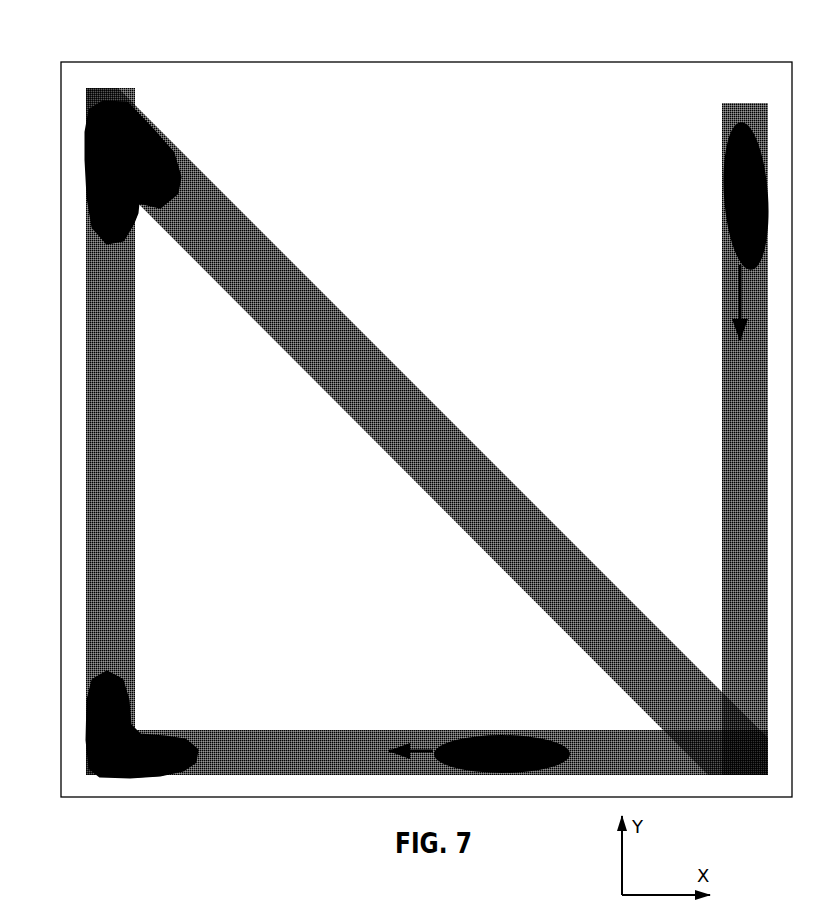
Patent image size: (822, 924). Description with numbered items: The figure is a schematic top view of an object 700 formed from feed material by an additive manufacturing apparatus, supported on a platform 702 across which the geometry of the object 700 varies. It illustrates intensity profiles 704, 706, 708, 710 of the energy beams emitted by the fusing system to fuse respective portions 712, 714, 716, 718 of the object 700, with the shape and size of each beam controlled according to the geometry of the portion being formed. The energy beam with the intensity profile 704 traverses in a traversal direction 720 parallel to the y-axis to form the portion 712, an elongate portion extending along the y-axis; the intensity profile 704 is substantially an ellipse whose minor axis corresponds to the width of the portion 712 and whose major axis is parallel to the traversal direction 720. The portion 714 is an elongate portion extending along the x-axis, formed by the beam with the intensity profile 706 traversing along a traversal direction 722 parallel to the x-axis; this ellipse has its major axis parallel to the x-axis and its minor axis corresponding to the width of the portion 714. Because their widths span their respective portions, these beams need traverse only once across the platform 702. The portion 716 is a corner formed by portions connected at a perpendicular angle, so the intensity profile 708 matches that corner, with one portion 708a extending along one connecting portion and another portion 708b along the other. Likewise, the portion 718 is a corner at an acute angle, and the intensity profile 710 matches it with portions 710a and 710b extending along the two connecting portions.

The object 700 is at (408, 438).
The platform 702 is at (440, 140).
The intensity profile 704 is at (723, 212).
The intensity profile 706 is at (524, 767).
The intensity profile 708 is at (110, 739).
The portion of intensity profile 708a is at (160, 769).
The portion of intensity profile 708b is at (86, 734).
The intensity profile 710 is at (149, 202).
The portion of intensity profile 710a is at (177, 165).
The portion of intensity profile 710b is at (118, 241).
The portion of object 712 is at (757, 500).
The portion of object 714 is at (357, 754).
The portion of object 716 is at (89, 776).
The portion of object 718 is at (82, 188).
The traversal direction 720 is at (736, 326).
The traversal direction 722 is at (414, 746).